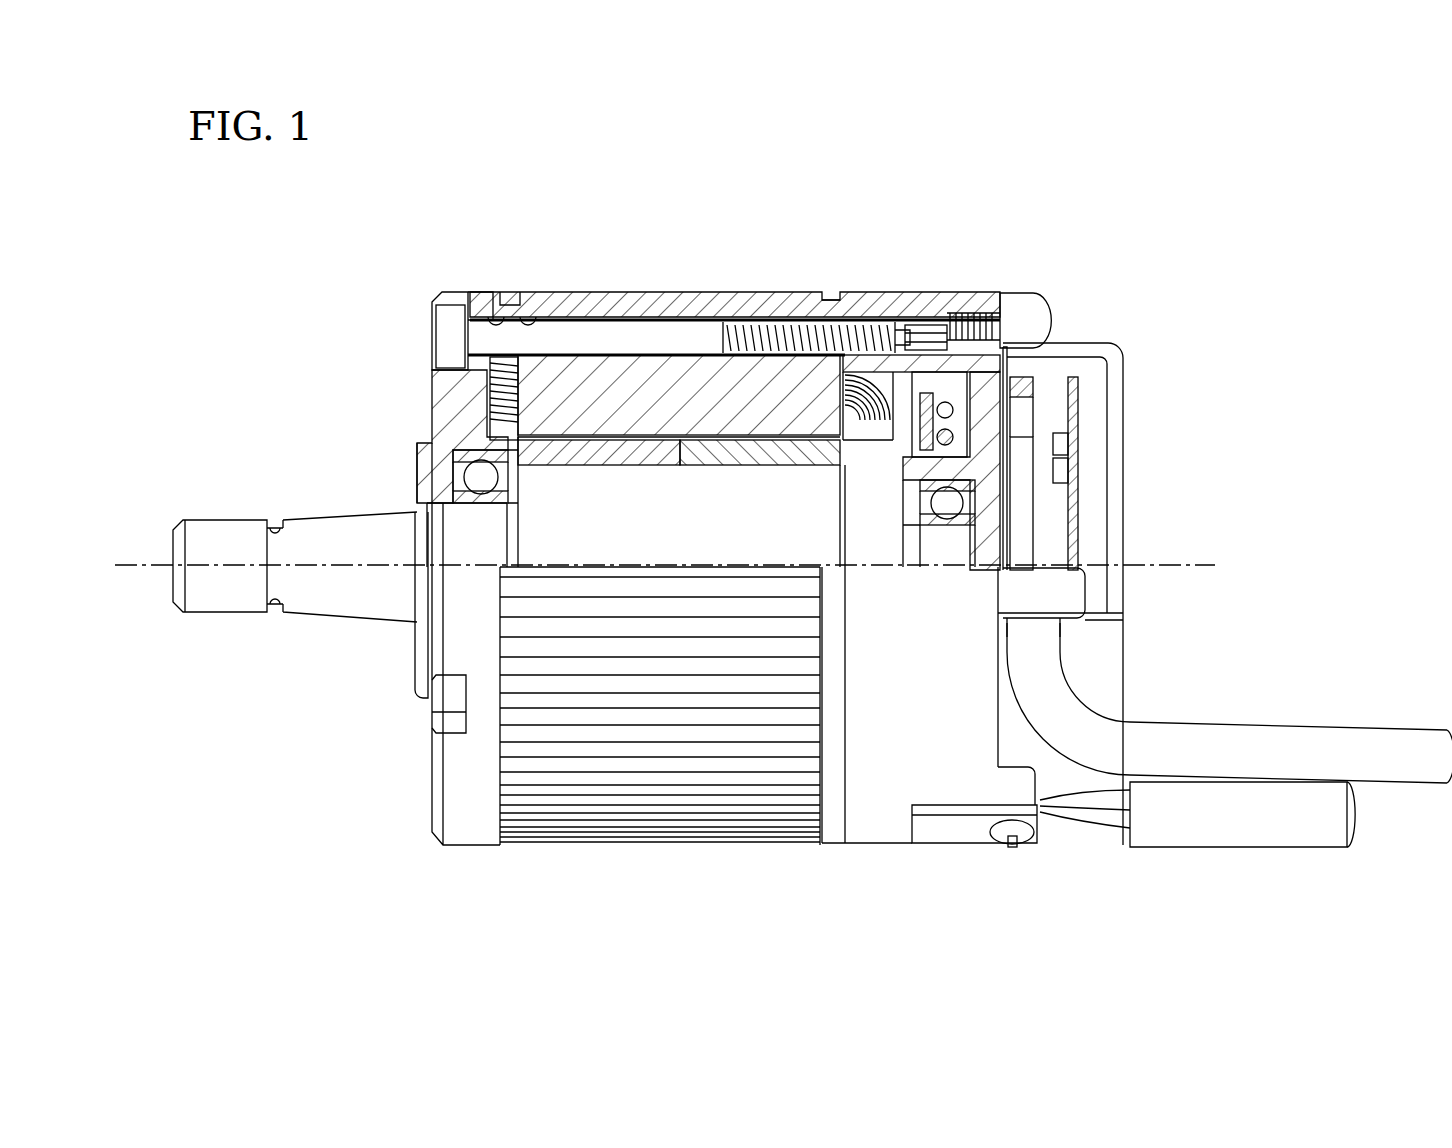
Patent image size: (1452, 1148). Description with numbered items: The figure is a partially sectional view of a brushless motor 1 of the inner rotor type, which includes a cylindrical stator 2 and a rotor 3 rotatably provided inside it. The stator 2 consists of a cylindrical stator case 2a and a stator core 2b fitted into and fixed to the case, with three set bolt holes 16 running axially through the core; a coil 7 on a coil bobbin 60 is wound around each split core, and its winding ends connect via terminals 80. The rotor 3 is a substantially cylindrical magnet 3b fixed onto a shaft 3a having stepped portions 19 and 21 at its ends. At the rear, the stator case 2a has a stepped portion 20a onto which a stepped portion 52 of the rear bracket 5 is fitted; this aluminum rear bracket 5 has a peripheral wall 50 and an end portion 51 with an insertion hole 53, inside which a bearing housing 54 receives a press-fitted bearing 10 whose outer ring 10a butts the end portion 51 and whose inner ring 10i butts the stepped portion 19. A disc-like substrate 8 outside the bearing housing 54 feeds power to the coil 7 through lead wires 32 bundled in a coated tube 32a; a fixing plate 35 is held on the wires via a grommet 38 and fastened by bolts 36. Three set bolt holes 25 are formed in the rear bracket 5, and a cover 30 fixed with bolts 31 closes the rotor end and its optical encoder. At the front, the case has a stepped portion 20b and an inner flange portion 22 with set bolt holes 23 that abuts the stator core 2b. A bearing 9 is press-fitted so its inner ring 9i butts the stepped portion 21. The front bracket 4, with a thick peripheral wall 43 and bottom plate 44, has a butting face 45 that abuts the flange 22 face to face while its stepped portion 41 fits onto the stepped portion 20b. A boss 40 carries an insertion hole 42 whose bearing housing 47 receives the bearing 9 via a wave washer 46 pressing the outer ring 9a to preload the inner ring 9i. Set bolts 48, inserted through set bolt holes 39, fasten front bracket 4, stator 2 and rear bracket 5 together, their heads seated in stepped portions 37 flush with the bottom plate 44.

The brushless motor 1 is at (1197, 228).
The stator 2 is at (681, 359).
The stator case 2a is at (640, 290).
The stator core 2b is at (682, 375).
The rotor 3 is at (376, 683).
The shaft 3a is at (320, 600).
The magnet 3b is at (440, 610).
The front bracket 4 is at (420, 407).
The rear bracket 5 is at (1032, 383).
The coil 7 is at (863, 370).
The substrate 8 is at (923, 425).
The bearing 9 is at (406, 561).
The outer ring 9a is at (500, 460).
The inner ring 9i is at (470, 482).
The bearing 10 is at (1054, 547).
The outer ring 10a is at (987, 447).
The inner ring 10i is at (955, 505).
The set bolt holes 16 is at (620, 333).
The stepped portion 19 is at (1063, 620).
The stepped portion 20a is at (833, 297).
The stepped portion 20b is at (492, 300).
The stepped portion 21 is at (513, 493).
The inner flange portion 22 is at (493, 357).
The set bolt holes 23 is at (527, 323).
The set bolt holes 25 is at (857, 327).
The cover 30 is at (1138, 352).
The bolts 31 is at (1045, 322).
The lead wires 32 is at (928, 397).
The coated tube 32a is at (1248, 830).
The fixing plate 35 is at (948, 830).
The bolts 36 is at (1024, 838).
The stepped portions 37 is at (487, 362).
The grommet 38 is at (1022, 785).
The set bolt holes 39 is at (470, 337).
The boss 40 is at (424, 677).
The stepped portion 41 is at (513, 303).
The insertion hole 42 is at (417, 510).
The peripheral wall 43 is at (453, 765).
The bottom plate 44 is at (445, 387).
The butting face 45 is at (493, 352).
The wave washer 46 is at (440, 483).
The bearing housing 47 is at (445, 452).
The set bolts 48 is at (447, 320).
The peripheral wall 50 is at (933, 303).
The end portion 51 is at (1012, 432).
The stepped portion 52 is at (813, 322).
The insertion hole 53 is at (1055, 470).
The bearing housing 54 is at (1010, 505).
The coil bobbin 60 is at (520, 372).
The terminals 80 is at (908, 380).